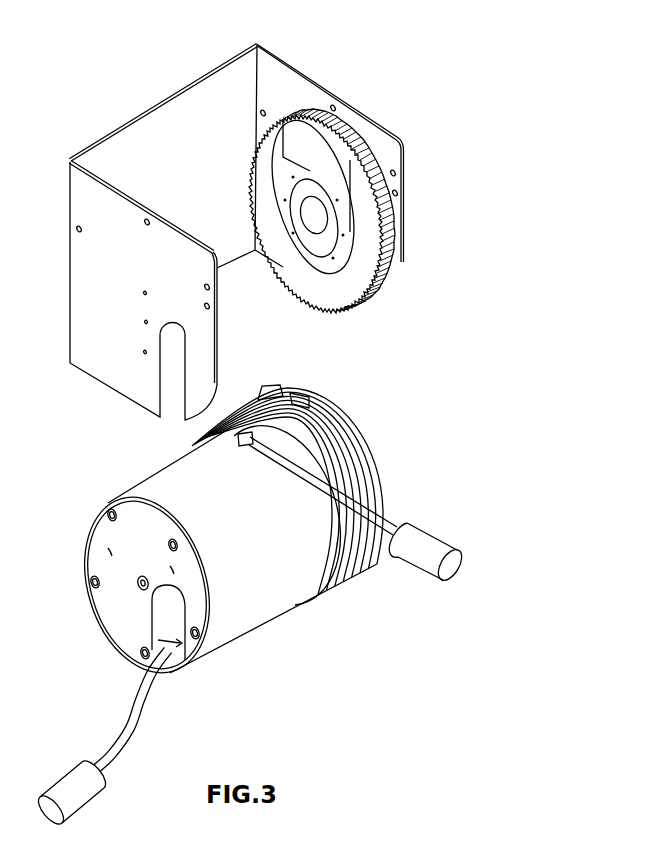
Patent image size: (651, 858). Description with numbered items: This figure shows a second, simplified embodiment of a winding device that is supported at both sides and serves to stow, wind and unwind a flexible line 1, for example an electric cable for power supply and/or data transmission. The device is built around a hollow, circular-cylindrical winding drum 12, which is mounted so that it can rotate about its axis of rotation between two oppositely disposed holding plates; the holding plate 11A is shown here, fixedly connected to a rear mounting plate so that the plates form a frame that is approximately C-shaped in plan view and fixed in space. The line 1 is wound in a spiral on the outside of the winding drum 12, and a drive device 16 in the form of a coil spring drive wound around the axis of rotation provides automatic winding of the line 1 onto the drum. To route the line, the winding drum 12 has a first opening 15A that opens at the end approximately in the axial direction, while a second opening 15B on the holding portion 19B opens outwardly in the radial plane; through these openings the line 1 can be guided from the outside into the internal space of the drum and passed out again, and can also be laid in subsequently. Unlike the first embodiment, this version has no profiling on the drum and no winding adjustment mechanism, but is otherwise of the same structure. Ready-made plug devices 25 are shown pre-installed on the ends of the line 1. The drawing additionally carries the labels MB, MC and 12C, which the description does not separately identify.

The flexible line 1 is at (137, 720).
The holding plate 11A is at (281, 92).
The bracket front plate MB is at (113, 342).
The bracket back wall MC is at (184, 172).
The winding drum 12 is at (260, 597).
The motor rear housing 12C is at (378, 490).
The first aperture or opening 15A is at (283, 399).
The second aperture or opening 15B is at (165, 645).
The drive device 16 is at (355, 273).
The holding portion 19B is at (118, 596).
The plug devices 25 is at (427, 560).